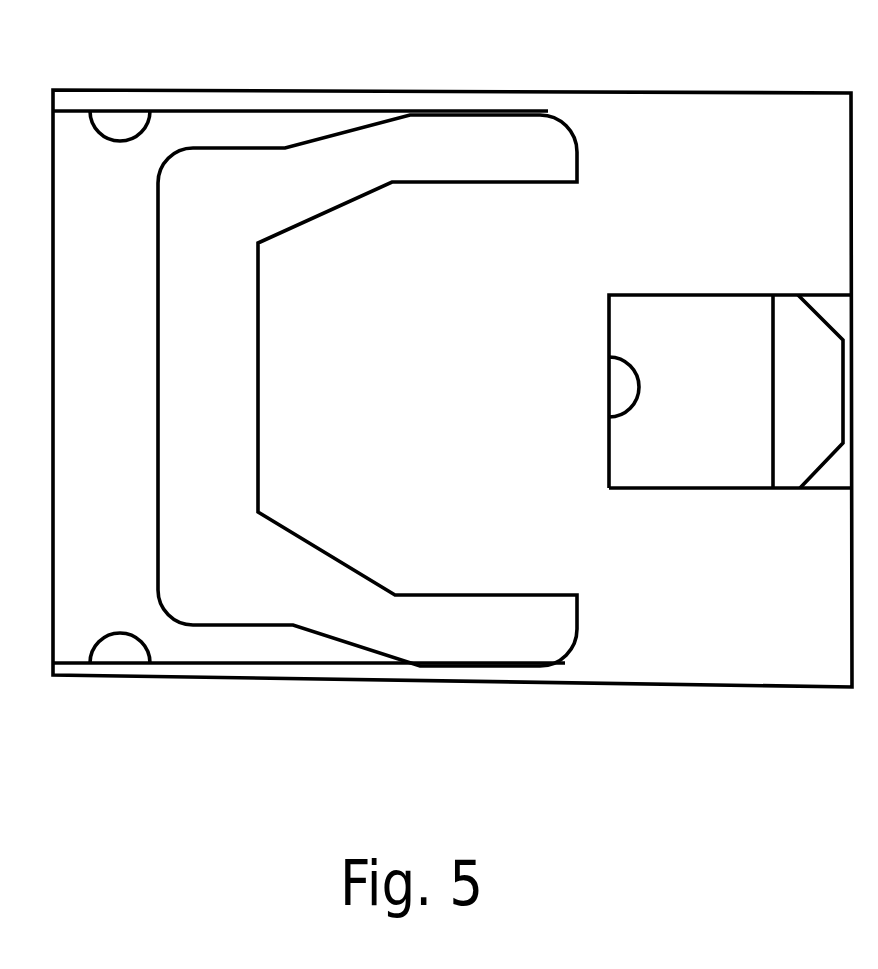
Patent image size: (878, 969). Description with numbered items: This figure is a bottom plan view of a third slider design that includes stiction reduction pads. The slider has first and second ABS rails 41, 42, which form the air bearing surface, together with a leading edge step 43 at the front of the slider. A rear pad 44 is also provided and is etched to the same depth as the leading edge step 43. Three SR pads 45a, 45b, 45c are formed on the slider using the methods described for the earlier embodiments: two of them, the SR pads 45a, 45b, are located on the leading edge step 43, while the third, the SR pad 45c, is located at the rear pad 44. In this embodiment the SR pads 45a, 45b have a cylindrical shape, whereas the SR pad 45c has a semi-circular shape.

The first ABS rail 41 is at (340, 183).
The second ABS rail 42 is at (356, 619).
The leading edge step 43 is at (452, 388).
The rear pad 44 is at (730, 391).
The SR pad 45a is at (128, 118).
The SR pad 45b is at (115, 655).
The SR pad 45c is at (621, 386).